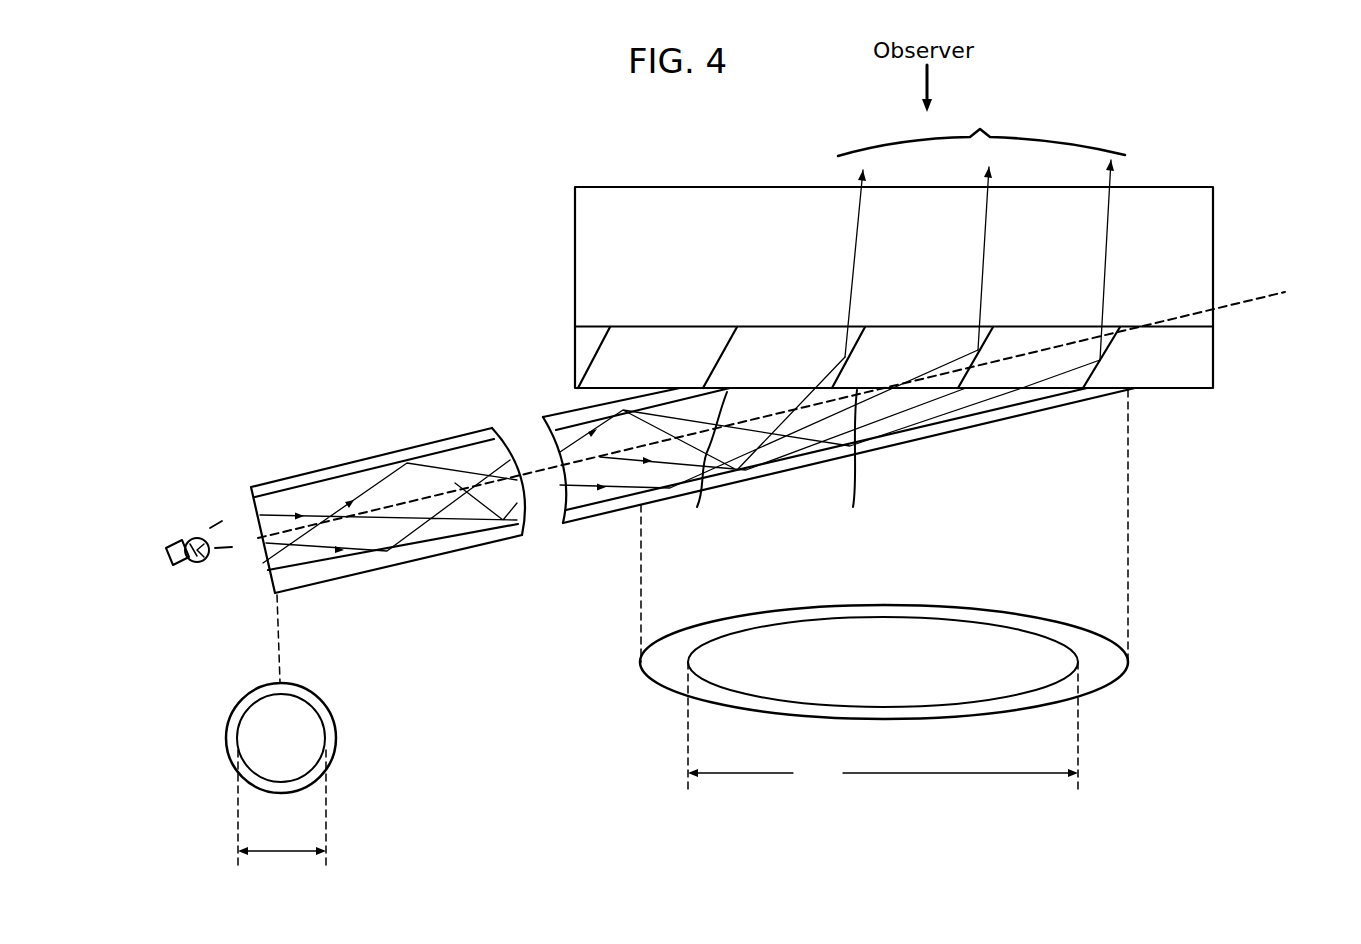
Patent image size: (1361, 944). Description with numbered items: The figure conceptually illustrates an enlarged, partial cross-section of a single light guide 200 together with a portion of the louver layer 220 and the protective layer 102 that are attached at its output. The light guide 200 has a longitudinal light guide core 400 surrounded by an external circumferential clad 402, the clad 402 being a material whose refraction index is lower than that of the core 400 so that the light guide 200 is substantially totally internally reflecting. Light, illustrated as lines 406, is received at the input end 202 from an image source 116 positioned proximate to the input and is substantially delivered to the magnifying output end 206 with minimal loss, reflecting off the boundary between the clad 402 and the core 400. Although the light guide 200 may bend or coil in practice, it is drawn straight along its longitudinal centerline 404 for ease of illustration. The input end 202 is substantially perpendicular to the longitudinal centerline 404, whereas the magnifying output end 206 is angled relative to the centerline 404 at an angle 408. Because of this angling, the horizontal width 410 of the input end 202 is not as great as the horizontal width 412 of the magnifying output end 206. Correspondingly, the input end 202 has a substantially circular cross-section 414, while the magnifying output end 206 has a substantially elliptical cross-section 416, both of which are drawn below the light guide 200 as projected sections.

The protective layer 102 is at (600, 261).
The louver layer 220 is at (582, 350).
The light guide 200 is at (327, 451).
The clad 402 is at (372, 458).
The light guide core 400 is at (438, 483).
The longitudinal centerline 404 is at (794, 408).
The light 406 is at (203, 590).
The angle 408 is at (697, 464).
The magnifying output end 206 is at (860, 463).
The image source 116 is at (193, 537).
The input end 202 is at (270, 580).
The circular cross-section 414 is at (342, 716).
The horizontal width 410 is at (282, 839).
The horizontal width 412 is at (883, 773).
The elliptical cross-section 416 is at (1105, 622).